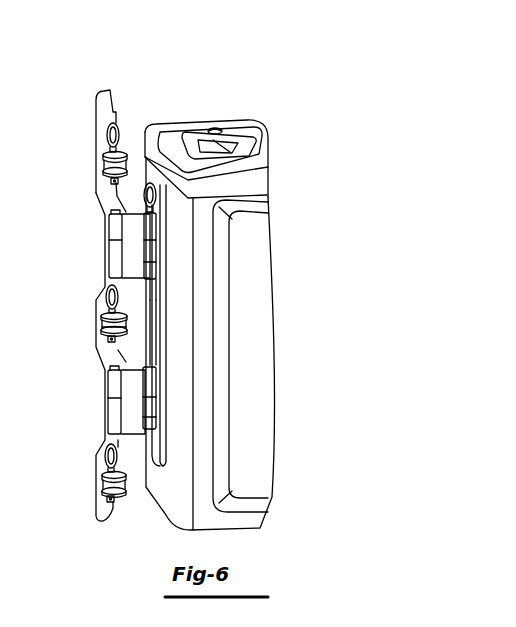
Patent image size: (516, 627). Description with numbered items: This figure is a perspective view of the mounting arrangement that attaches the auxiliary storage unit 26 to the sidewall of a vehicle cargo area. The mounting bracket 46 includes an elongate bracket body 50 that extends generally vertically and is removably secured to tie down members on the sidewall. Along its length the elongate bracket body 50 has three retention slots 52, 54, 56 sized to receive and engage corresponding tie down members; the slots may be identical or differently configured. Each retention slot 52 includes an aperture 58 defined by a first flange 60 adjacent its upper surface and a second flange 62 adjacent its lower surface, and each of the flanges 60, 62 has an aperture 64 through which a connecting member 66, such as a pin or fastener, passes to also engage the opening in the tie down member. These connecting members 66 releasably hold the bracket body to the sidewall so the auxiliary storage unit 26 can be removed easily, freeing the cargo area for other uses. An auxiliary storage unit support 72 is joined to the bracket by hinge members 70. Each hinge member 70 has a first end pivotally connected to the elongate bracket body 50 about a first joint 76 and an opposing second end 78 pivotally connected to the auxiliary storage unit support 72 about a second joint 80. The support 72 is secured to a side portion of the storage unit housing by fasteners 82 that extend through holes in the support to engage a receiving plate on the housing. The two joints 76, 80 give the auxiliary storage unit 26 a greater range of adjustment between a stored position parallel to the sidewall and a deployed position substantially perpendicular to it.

The auxiliary storage unit 26 is at (232, 314).
The mounting bracket 46 is at (122, 93).
The elongate bracket body 50 is at (108, 91).
The retention slot 52 is at (107, 176).
The retention slot 54 is at (105, 338).
The retention slot 56 is at (100, 497).
The aperture 58 is at (103, 167).
The first flange 60 is at (101, 315).
The second flange 62 is at (105, 333).
The aperture 64 is at (107, 472).
The connecting member 66 is at (107, 150).
The hinge member 70 is at (108, 405).
The auxiliary storage unit support 72 is at (166, 322).
The first joint 76 is at (112, 241).
The second end 78 is at (150, 379).
The second joint 80 is at (156, 210).
The fastener 82 is at (152, 180).